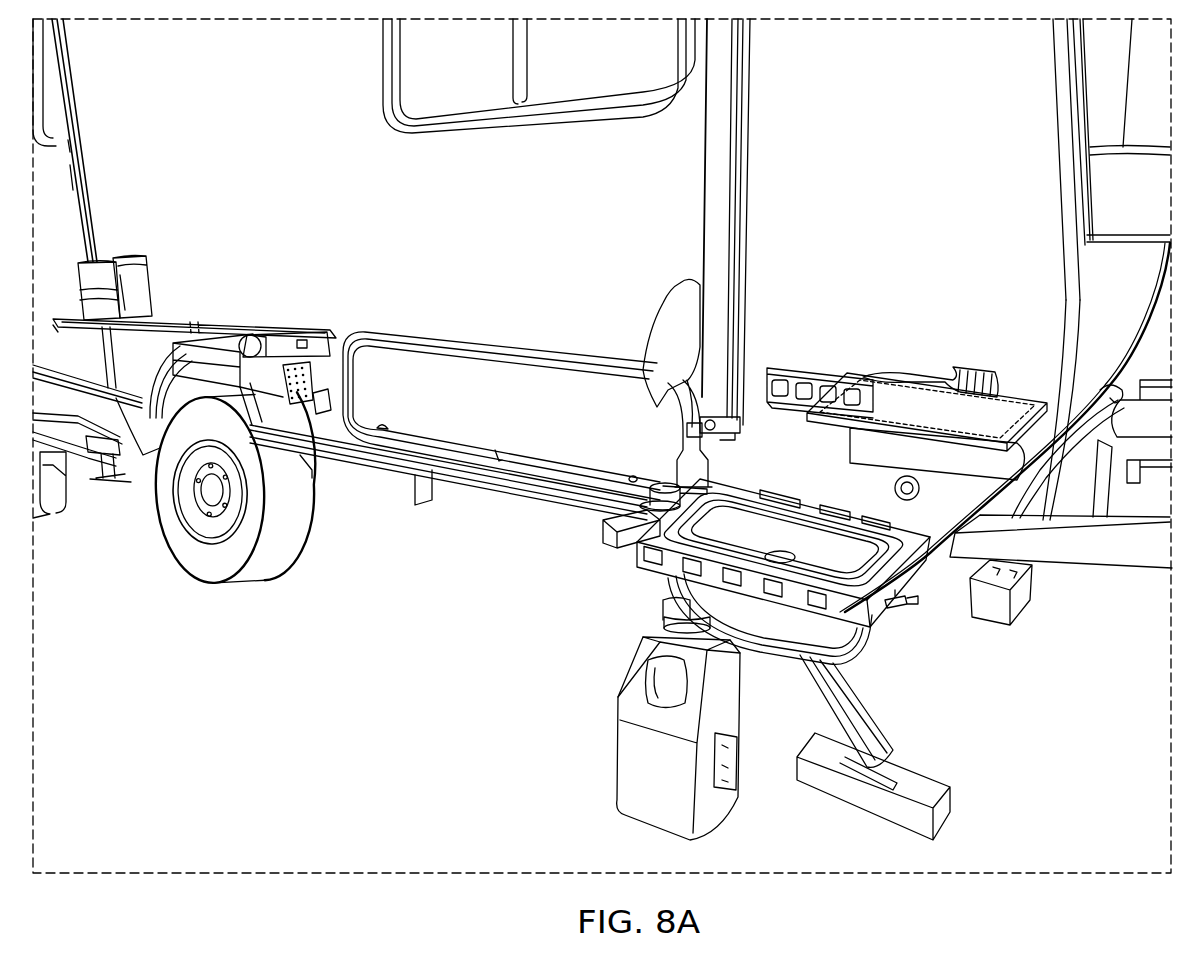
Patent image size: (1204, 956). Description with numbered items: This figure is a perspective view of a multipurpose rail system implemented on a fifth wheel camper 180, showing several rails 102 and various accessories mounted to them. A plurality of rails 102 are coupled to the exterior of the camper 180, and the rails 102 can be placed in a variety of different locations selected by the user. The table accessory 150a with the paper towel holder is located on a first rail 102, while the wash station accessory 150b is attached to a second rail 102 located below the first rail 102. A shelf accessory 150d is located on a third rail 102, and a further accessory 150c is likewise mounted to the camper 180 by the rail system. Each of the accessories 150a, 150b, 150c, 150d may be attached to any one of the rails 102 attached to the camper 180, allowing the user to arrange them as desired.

The 5th wheel camper 180 is at (298, 153).
The accessory 150c is at (157, 310).
The shelf accessory 150d is at (297, 332).
The rail 102 is at (815, 372).
The table accessory 150a is at (1007, 407).
The wash station accessory 150b is at (633, 552).